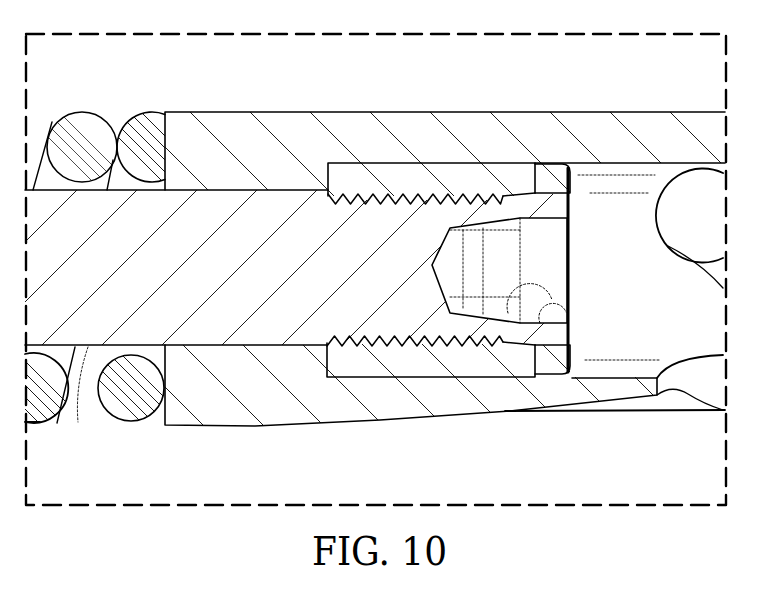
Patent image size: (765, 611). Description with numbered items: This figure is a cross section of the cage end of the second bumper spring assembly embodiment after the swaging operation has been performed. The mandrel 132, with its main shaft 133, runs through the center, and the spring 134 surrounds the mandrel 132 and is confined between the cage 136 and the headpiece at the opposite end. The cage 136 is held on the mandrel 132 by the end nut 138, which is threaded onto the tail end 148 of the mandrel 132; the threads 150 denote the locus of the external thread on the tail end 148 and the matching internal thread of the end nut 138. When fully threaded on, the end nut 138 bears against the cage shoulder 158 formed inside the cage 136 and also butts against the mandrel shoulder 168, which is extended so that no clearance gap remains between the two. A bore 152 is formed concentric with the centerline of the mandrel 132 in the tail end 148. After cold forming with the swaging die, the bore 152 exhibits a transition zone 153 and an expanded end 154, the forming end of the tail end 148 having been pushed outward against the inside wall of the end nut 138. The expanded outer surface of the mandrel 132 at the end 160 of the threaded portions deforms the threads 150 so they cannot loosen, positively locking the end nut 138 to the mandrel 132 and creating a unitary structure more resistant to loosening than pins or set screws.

The mandrel 132 is at (203, 283).
The main shaft 133 is at (85, 400).
The spring 134 is at (80, 111).
The cage 136 is at (208, 420).
The end nut 138 is at (393, 168).
The tail end 148 is at (573, 230).
The threads 150 is at (381, 268).
The bore 152 is at (440, 292).
The transition zone 153 is at (572, 278).
The expanded end 154 is at (570, 302).
The cage shoulder 158 is at (330, 163).
The end of the threaded portions 160 is at (504, 192).
The mandrel shoulder 168 is at (322, 201).